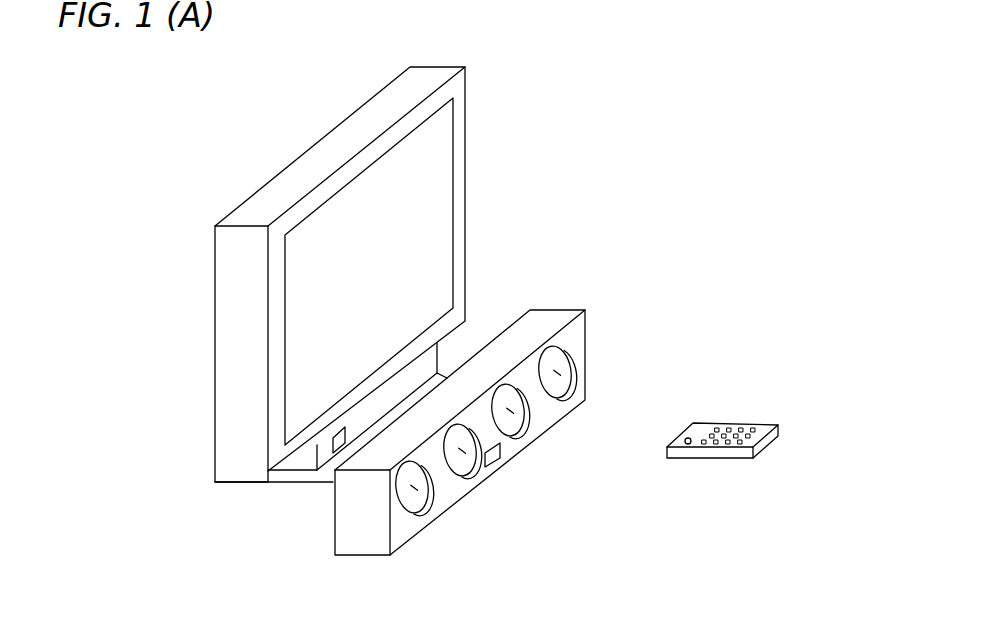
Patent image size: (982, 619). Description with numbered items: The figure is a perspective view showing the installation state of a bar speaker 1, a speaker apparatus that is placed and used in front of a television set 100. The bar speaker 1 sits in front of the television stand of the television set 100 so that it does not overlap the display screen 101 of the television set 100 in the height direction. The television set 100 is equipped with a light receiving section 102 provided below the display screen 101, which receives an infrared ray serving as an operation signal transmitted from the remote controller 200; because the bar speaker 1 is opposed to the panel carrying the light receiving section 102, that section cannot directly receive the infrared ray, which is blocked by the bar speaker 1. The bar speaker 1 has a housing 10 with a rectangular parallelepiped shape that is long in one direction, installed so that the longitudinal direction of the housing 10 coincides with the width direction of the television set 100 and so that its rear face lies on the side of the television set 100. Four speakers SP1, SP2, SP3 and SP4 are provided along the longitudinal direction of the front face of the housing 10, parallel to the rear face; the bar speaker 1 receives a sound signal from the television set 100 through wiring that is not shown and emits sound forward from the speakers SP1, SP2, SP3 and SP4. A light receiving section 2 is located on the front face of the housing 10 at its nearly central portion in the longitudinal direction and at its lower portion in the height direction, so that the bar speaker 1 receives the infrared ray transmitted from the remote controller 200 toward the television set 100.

The bar speaker 1 is at (600, 345).
The housing 10 is at (530, 310).
The light receiving section 2 is at (497, 467).
The television set 100 is at (215, 225).
The display screen 101 is at (443, 192).
The light receiving section 102 is at (300, 482).
The remote controller 200 is at (767, 423).
The speaker SP1 is at (560, 380).
The speaker SP2 is at (512, 413).
The speaker SP3 is at (465, 460).
The speaker SP4 is at (412, 497).